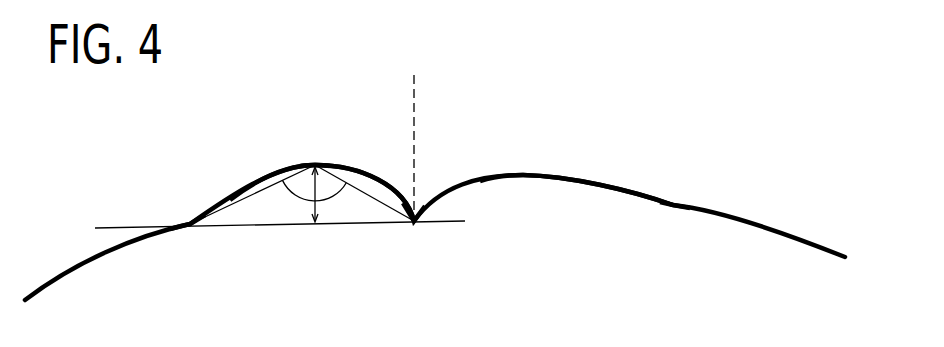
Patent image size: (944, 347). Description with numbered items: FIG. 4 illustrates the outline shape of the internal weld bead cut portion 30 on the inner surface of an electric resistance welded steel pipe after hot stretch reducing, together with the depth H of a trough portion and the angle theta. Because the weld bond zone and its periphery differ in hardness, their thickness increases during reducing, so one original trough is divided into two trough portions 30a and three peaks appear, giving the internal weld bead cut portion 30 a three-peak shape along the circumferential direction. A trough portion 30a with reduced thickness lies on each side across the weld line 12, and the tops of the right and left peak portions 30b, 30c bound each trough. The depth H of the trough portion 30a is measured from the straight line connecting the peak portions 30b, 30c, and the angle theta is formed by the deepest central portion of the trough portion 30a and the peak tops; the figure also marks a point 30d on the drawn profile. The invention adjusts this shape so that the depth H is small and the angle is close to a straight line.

The internal weld bead cut portion 30 is at (678, 278).
The trough portion 30a is at (367, 166).
The peak portion 30b is at (414, 224).
The peak portion 30c is at (190, 227).
The peak portion 30d is at (313, 163).
The weld line 12 is at (417, 92).
The depth of trough portion H is at (308, 203).